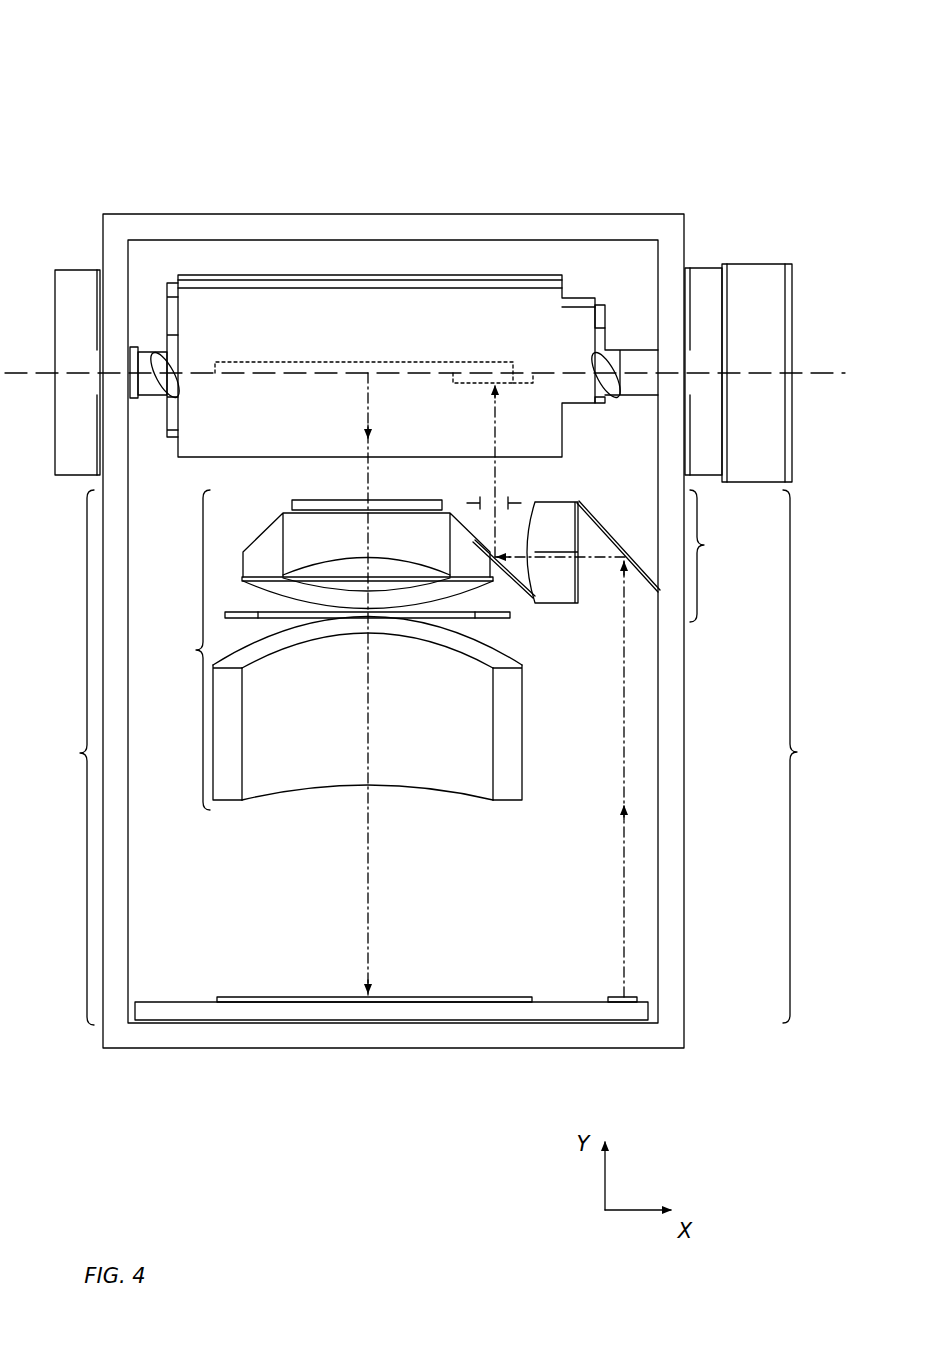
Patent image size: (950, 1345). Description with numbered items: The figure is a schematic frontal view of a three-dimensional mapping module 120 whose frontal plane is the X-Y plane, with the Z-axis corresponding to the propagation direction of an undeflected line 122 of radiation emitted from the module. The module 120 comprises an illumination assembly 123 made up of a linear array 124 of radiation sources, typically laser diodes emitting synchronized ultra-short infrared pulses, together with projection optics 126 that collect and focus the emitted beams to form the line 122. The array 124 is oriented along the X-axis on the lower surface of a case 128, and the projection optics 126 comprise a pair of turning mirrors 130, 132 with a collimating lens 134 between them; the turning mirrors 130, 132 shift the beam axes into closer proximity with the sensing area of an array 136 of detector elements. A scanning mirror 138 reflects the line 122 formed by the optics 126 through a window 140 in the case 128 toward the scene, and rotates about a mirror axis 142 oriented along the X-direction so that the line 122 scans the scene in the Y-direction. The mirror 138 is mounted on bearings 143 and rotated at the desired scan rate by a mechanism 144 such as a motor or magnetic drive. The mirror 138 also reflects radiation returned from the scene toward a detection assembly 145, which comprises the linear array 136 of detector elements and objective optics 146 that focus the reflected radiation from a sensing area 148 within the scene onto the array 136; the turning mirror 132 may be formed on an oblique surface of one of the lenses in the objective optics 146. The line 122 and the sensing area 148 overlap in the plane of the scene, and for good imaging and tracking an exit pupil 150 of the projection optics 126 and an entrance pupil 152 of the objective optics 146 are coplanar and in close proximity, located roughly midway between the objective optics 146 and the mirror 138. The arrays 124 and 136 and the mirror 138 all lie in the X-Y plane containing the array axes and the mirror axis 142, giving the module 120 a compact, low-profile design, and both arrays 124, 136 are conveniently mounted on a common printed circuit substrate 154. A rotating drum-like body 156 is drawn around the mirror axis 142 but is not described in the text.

The 3D mapping module 120 is at (132, 46).
The line of radiation 122 is at (514, 385).
The illumination assembly 123 is at (814, 756).
The linear array of radiation sources 124 is at (608, 997).
The projection optics 126 is at (722, 556).
The case 128 is at (124, 1043).
The turning mirror 130 is at (598, 522).
The turning mirror 132 is at (525, 600).
The collimating lens 134 is at (570, 603).
The linear array of detector elements 136 is at (232, 997).
The scanning mirror 138 is at (572, 295).
The window 140 is at (143, 252).
The mirror axis 142 is at (830, 373).
The bearings 143 is at (65, 272).
The mechanism 144 is at (775, 264).
The detection assembly 145 is at (64, 757).
The objective optics 146 is at (333, 650).
The sensing area 148 is at (236, 362).
The exit pupil 150 is at (478, 500).
The entrance pupil 152 is at (300, 500).
The printed circuit substrate 154 is at (203, 1018).
The rotating drum 156 is at (388, 330).